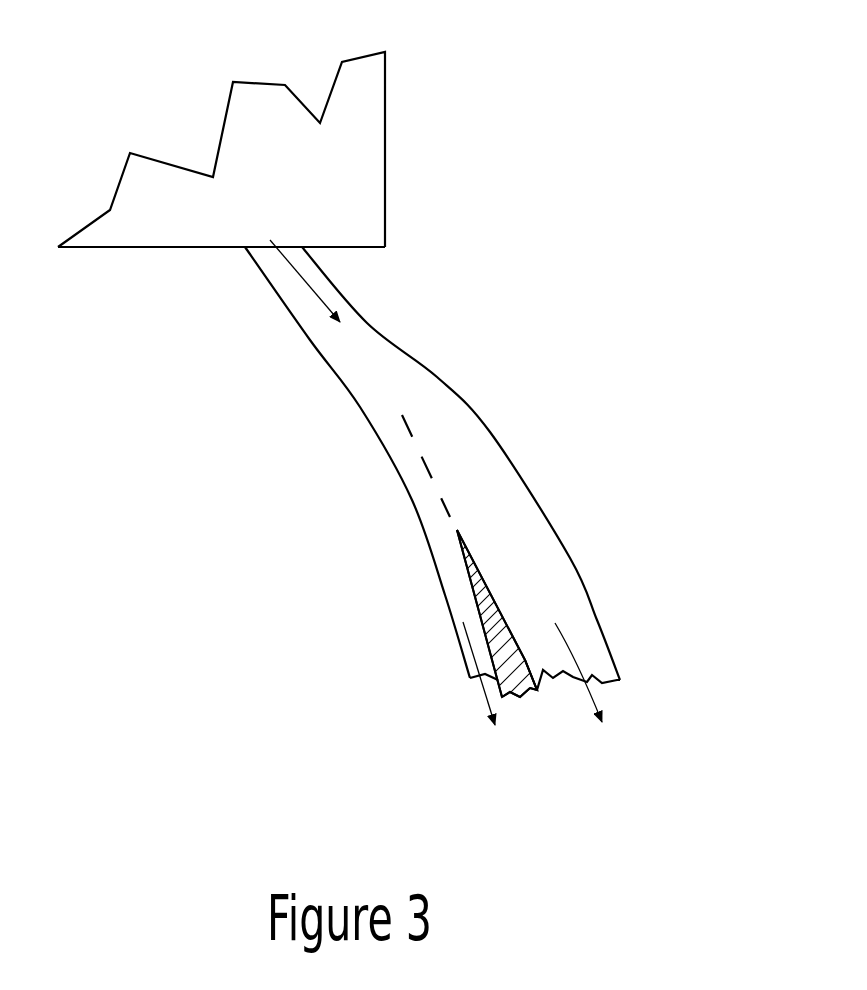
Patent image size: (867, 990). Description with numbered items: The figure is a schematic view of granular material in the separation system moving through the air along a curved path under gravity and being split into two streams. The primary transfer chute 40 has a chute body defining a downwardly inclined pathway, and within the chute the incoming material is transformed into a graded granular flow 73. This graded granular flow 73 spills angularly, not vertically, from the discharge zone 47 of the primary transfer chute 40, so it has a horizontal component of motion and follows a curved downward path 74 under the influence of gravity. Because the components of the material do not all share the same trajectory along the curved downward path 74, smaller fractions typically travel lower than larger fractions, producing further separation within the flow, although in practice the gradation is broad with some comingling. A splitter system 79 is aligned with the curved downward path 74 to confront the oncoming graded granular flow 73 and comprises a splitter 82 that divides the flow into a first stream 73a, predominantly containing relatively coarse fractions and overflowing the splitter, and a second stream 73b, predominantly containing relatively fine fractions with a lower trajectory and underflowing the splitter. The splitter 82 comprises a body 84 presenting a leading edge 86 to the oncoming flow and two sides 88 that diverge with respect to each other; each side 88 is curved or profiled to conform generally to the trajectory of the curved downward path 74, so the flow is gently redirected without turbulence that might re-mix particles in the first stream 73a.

The primary transfer chute 40 is at (372, 148).
The discharge zone 47 is at (287, 237).
The curved downward path 74 is at (322, 295).
The graded granular flow 73 is at (454, 486).
The first stream 73a is at (570, 558).
The second stream 73b is at (445, 595).
The body 84 is at (490, 598).
The leading edge 86 is at (477, 579).
The sides 88 is at (478, 599).
The splitter 82 is at (515, 680).
The splitter system 79 is at (537, 695).